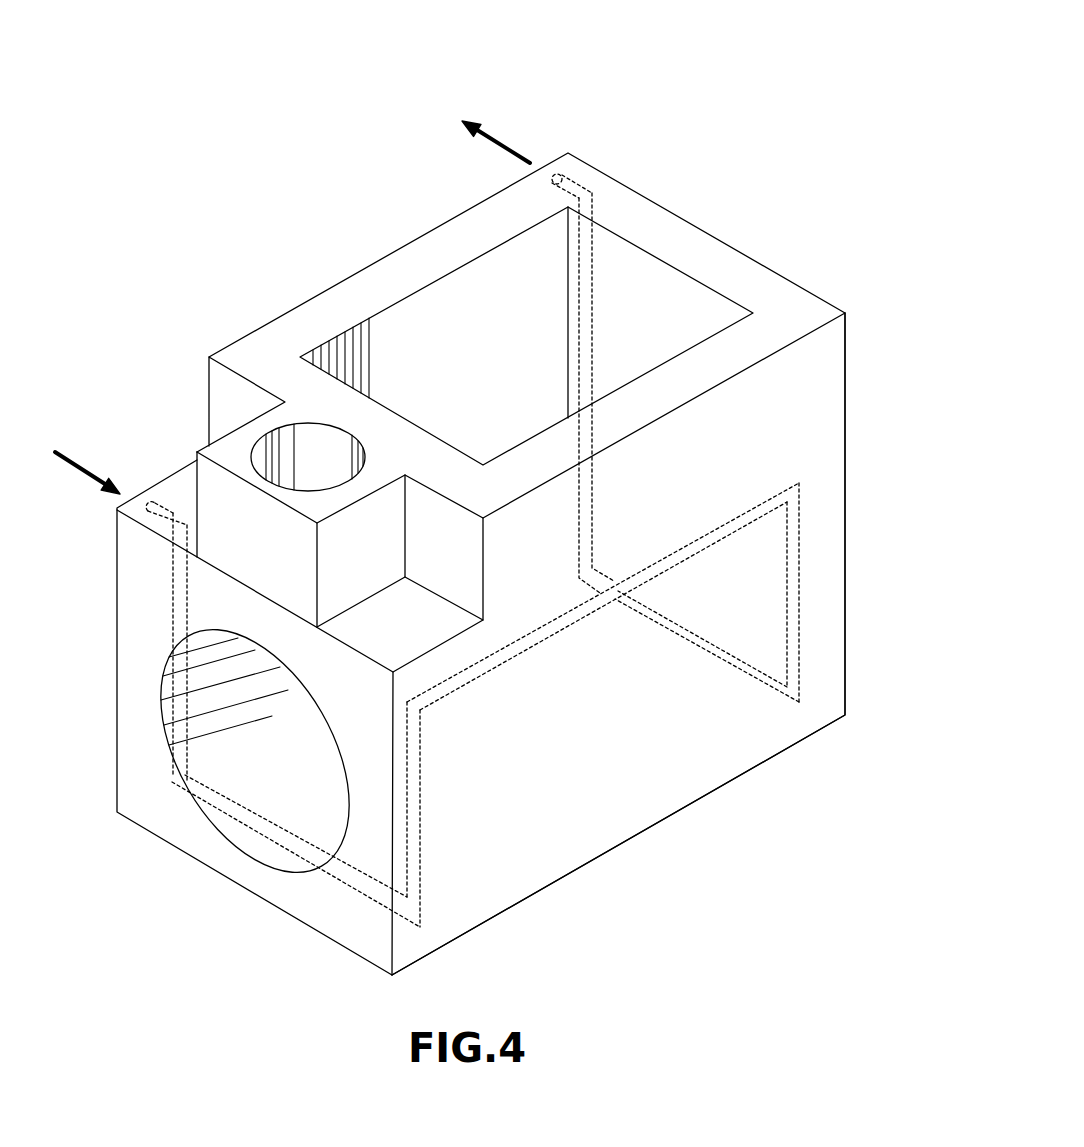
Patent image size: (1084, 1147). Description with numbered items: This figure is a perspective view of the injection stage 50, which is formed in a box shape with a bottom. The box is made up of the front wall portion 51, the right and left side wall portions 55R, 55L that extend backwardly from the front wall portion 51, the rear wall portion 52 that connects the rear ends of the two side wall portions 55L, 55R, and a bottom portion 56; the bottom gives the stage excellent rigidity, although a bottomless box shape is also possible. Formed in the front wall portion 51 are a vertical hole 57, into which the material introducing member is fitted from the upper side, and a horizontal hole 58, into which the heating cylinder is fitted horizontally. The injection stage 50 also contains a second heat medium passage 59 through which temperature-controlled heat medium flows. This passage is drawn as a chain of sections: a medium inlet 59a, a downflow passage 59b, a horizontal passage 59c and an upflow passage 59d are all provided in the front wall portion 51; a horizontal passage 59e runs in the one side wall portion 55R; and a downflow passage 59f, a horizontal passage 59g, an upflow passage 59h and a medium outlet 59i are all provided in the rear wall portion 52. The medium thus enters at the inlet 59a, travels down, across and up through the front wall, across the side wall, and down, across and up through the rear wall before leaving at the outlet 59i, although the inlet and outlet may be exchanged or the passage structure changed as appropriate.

The injection stage 50 is at (693, 118).
The front wall portion 51 is at (338, 913).
The rear wall portion 52 is at (705, 246).
The left side wall portion 55L is at (413, 267).
The right side wall portion 55R is at (660, 392).
The bottom portion 56 is at (586, 872).
The vertical hole 57 is at (287, 450).
The horizontal hole 58 is at (212, 718).
The second heat medium passage 59 is at (422, 522).
The medium inlet 59a is at (152, 506).
The downflow passage 59b is at (173, 605).
The horizontal passage 59c is at (268, 843).
The upflow passage 59d is at (420, 820).
The horizontal passage 59e is at (533, 630).
The downflow passage 59f is at (787, 585).
The horizontal passage 59g is at (677, 638).
The upflow passage 59h is at (597, 335).
The medium outlet 59i is at (556, 174).